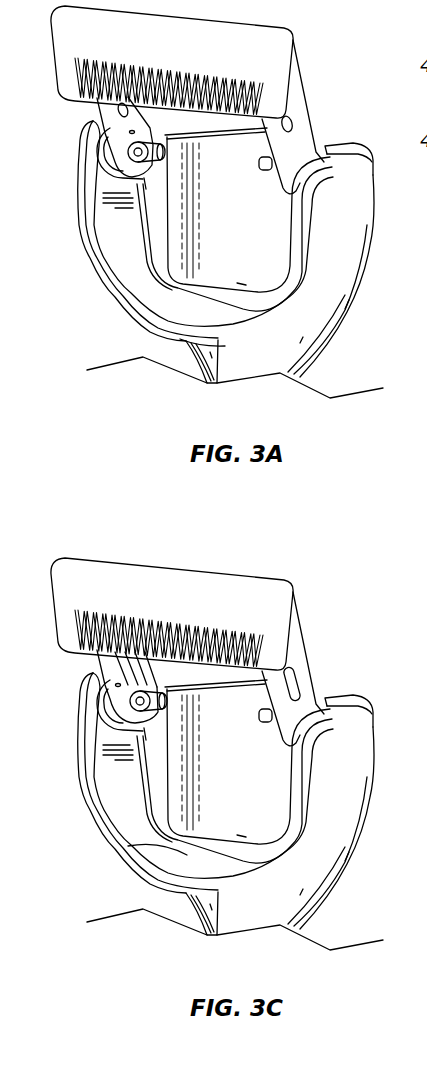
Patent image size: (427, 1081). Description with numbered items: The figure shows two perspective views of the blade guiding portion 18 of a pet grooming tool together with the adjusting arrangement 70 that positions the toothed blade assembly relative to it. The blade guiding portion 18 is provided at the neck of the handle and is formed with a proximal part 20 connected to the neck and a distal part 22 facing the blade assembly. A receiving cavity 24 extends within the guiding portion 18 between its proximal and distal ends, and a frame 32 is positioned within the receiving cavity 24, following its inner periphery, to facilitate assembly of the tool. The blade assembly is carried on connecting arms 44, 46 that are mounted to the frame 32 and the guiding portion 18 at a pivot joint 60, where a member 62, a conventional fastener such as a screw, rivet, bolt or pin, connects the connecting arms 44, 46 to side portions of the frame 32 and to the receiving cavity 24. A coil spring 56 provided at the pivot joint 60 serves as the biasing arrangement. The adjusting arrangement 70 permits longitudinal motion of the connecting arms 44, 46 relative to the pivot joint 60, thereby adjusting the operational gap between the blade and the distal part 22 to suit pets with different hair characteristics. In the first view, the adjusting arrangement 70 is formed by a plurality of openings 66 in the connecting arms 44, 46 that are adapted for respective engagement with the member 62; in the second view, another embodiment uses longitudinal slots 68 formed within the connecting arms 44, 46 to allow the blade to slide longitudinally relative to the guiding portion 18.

In FIG. 3A, the blade guiding portion 18 is at (357, 326).
In FIG. 3C, the blade guiding portion 18 is at (357, 878).
In FIG. 3A, the proximal part 20 is at (190, 331).
In FIG. 3A, the distal part 22 is at (347, 143).
In FIG. 3A, the receiving cavity 24 is at (259, 254).
In FIG. 3C, the frame 32 is at (128, 846).
In FIG. 3C, the connecting arm 44 is at (112, 662).
In FIG. 3C, the connecting arm 46 is at (298, 660).
In FIG. 3C, the coil spring 56 is at (313, 703).
In FIG. 3A, the pivot joint 60 is at (128, 153).
In FIG. 3A, the member 62 is at (130, 172).
In FIG. 3C, the member 62 is at (133, 722).
In FIG. 3A, the openings 66 is at (297, 124).
In FIG. 3C, the longitudinal slots 68 is at (300, 688).
In FIG. 3A, the adjusting arrangement 70 is at (318, 87).
In FIG. 3C, the adjusting arrangement 70 is at (167, 677).